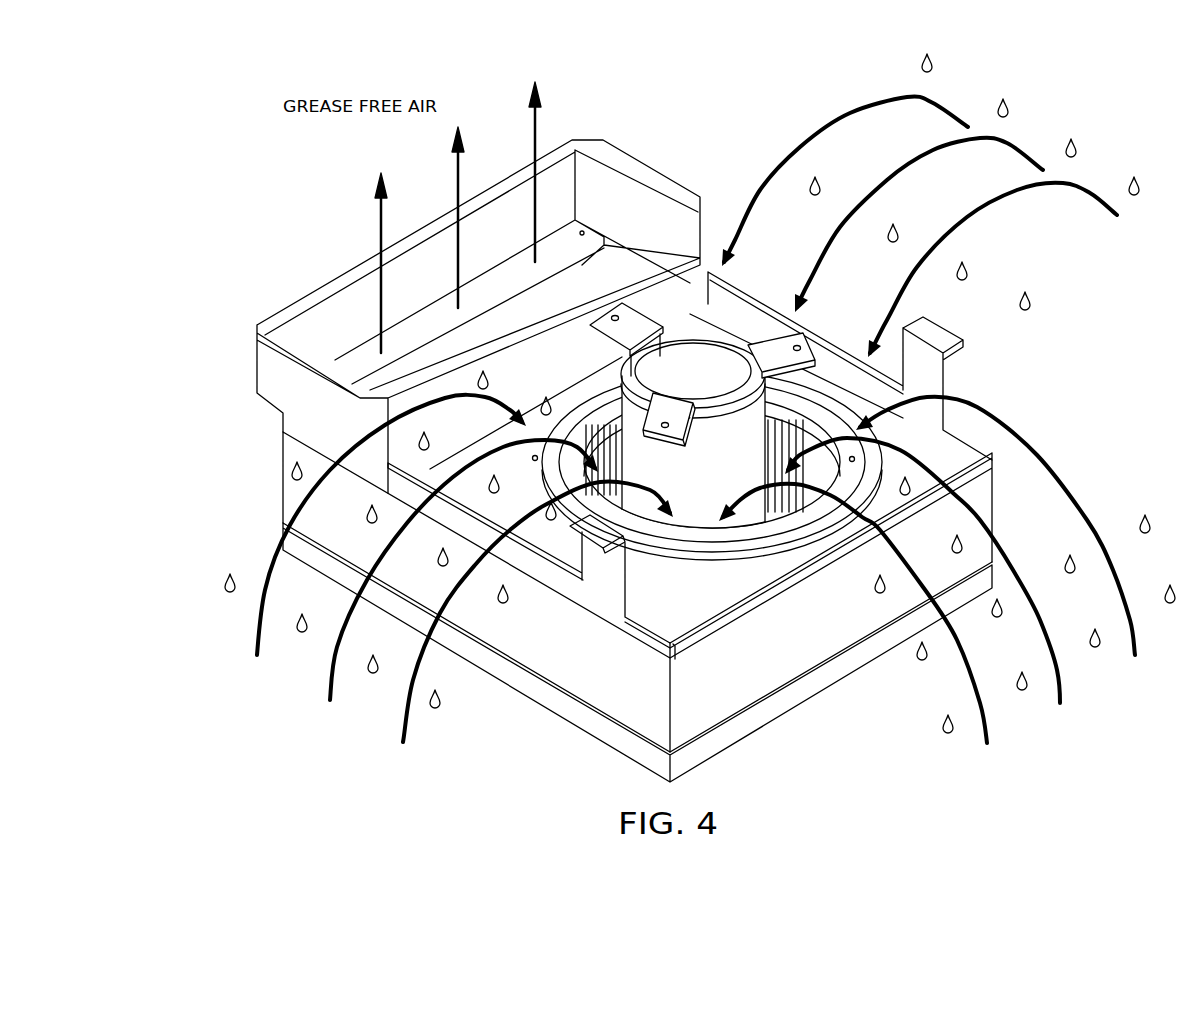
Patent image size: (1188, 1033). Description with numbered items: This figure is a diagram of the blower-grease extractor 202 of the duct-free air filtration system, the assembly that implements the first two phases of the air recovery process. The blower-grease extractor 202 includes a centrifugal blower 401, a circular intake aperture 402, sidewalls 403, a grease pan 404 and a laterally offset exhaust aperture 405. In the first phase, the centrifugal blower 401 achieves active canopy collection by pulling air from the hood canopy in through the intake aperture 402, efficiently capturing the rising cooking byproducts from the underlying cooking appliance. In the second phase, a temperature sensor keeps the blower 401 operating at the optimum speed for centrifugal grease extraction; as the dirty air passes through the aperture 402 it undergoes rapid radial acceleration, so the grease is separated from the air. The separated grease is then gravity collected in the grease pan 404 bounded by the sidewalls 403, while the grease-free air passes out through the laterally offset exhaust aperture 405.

The blower-grease extractor 202 is at (764, 113).
The centrifugal blower 401 is at (600, 400).
The circular intake aperture 402 is at (986, 499).
The sidewalls 403 is at (553, 663).
The grease pan 404 is at (582, 734).
The laterally offset exhaust aperture 405 is at (631, 187).